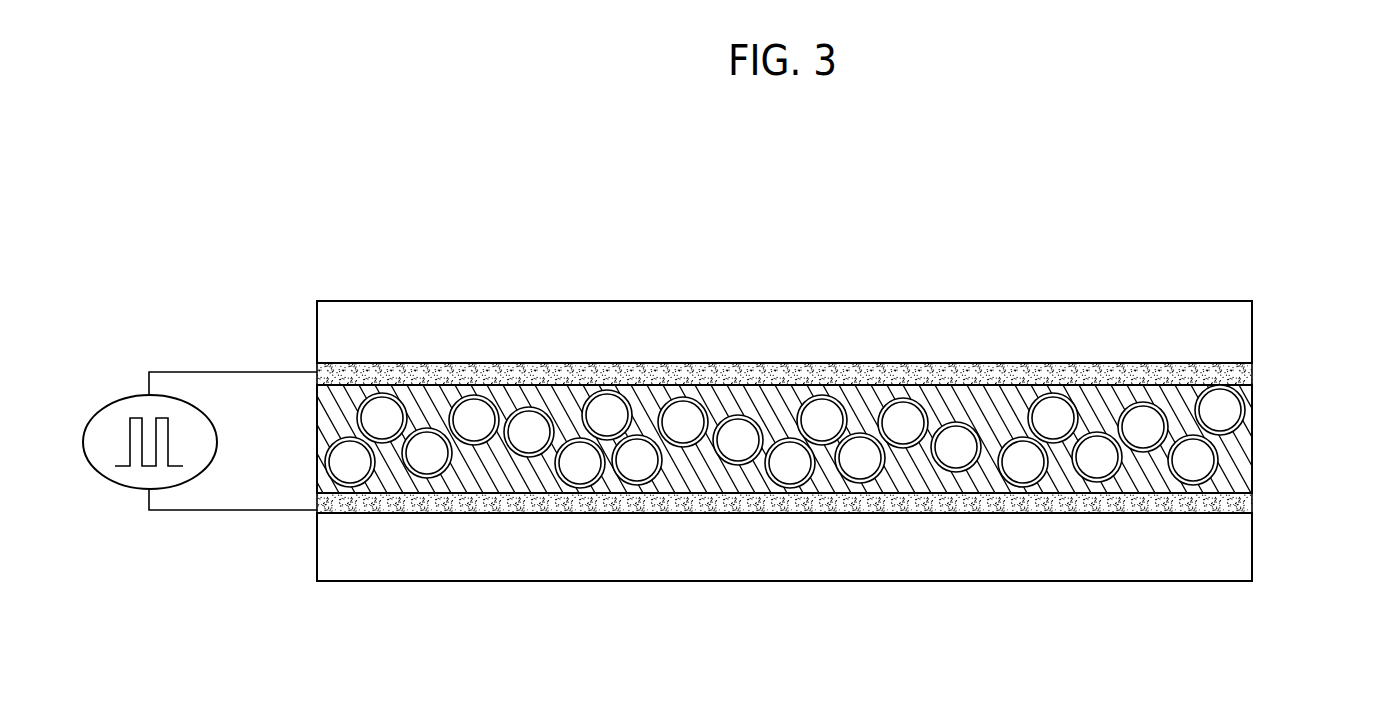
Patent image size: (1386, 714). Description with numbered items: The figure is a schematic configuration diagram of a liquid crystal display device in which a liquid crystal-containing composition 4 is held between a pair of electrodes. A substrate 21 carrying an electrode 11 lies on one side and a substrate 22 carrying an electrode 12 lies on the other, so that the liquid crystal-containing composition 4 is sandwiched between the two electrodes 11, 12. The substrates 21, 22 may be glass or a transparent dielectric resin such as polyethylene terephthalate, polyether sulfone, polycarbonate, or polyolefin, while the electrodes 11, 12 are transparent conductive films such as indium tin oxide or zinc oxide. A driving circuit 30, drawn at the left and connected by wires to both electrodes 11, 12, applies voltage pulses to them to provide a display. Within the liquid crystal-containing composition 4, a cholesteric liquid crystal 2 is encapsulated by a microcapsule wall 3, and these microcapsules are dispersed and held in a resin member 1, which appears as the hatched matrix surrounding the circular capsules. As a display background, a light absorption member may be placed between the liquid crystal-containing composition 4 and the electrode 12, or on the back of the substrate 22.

The substrate 21 is at (1240, 319).
The electrode 11 is at (1245, 368).
The microcapsule wall 3 is at (1230, 450).
The cholesteric liquid crystal 2 is at (1193, 460).
The resin member 1 is at (1341, 417).
The liquid crystal-containing composition 4 is at (816, 459).
The electrode 12 is at (1242, 499).
The substrate 22 is at (1242, 555).
The driving circuit 30 is at (107, 480).